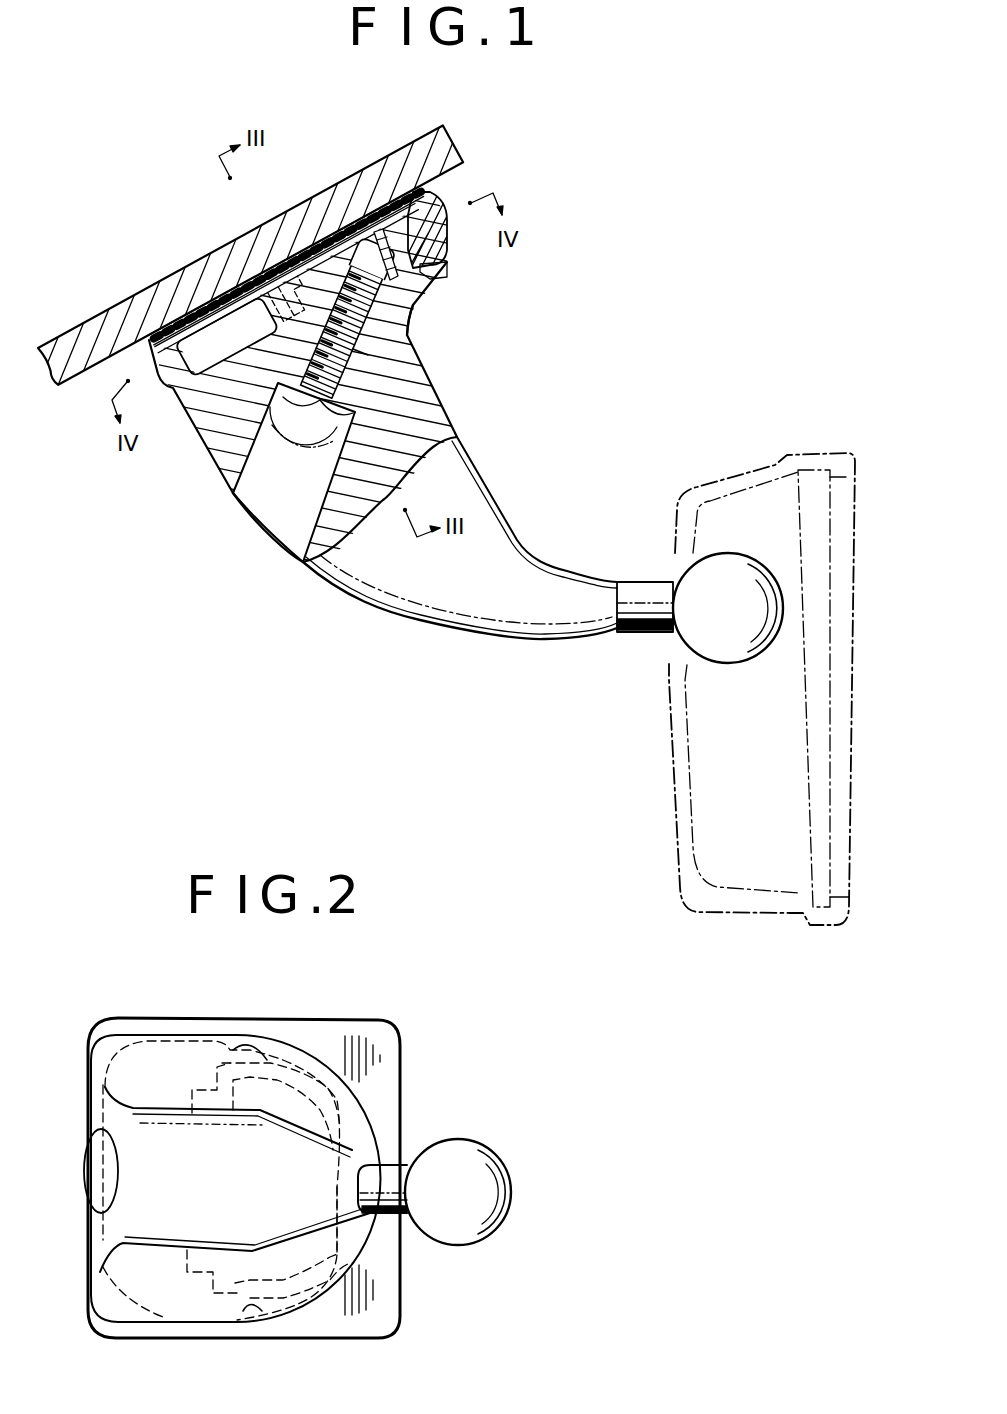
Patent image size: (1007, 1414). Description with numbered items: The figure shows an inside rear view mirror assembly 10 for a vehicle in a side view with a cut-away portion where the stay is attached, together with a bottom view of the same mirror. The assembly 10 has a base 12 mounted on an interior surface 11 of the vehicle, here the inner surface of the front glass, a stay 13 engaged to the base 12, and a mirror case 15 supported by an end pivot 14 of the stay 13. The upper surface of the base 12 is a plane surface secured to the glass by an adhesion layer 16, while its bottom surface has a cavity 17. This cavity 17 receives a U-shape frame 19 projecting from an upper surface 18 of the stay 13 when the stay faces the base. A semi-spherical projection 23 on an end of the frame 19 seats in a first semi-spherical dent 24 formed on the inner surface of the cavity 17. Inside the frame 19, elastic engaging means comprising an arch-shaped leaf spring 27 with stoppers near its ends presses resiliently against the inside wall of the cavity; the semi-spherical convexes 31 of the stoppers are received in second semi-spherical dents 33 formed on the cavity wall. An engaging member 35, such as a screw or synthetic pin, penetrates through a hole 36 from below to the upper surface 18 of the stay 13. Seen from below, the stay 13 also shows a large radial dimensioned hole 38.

In FIG. 1, the assembly 10 is at (500, 468).
In FIG. 2, the assembly 10 is at (420, 1092).
In FIG. 1, the interior surface 11 is at (88, 385).
In FIG. 1, the base 12 is at (168, 391).
In FIG. 2, the base 12 is at (328, 1043).
In FIG. 1, the stay 13 is at (493, 613).
In FIG. 2, the stay 13 is at (182, 1225).
In FIG. 1, the end pivot 14 is at (707, 634).
In FIG. 2, the end pivot 14 is at (500, 1187).
In FIG. 1, the mirror case 15 is at (725, 488).
In FIG. 1, the adhesion layer 16 is at (430, 190).
In FIG. 1, the cavity 17 is at (197, 345).
In FIG. 2, the cavity 17 is at (163, 1057).
In FIG. 1, the upper surface 18 is at (227, 373).
In FIG. 1, the U-shape frame 19 is at (365, 243).
In FIG. 2, the U-shape frame 19 is at (345, 1258).
In FIG. 1, the semi-spherical projection 23 is at (392, 228).
In FIG. 1, the first semi-spherical dent 24 is at (425, 268).
In FIG. 1, the leaf spring 27 is at (310, 265).
In FIG. 1, the semi-spherical convex 31 is at (285, 258).
In FIG. 2, the second semi-spherical dent 33 is at (256, 1047).
In FIG. 1, the engaging member 35 is at (405, 336).
In FIG. 1, the hole 36 is at (362, 391).
In FIG. 1, the large radial dimensioned hole 38 is at (275, 515).
In FIG. 2, the large radial dimensioned hole 38 is at (95, 1170).